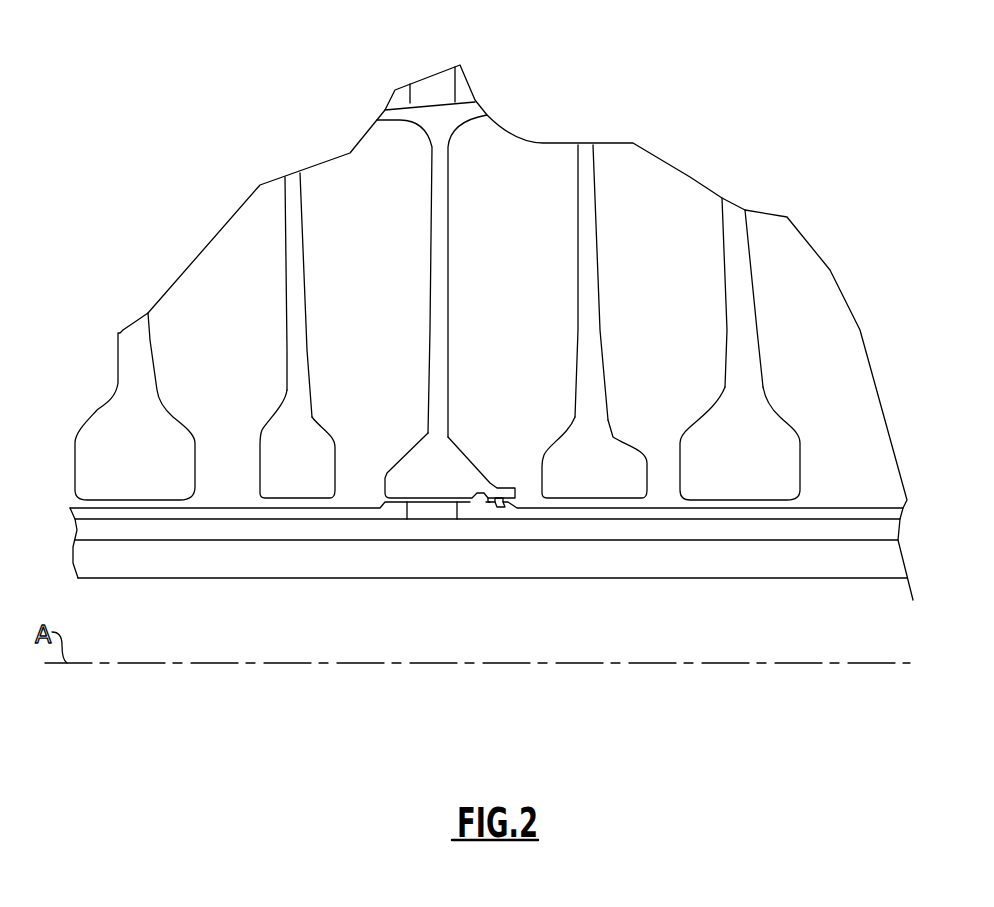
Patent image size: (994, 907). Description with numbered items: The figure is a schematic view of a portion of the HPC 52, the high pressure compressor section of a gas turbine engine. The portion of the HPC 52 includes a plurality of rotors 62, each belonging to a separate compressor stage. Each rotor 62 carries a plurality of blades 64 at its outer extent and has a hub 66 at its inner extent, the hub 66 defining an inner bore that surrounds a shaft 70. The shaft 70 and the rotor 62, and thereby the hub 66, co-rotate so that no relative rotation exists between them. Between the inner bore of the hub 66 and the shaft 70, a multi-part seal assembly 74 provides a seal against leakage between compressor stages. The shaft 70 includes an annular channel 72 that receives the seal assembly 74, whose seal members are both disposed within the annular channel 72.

The HPC 52 is at (494, 314).
The rotors 62 is at (297, 293).
The blades 64 is at (432, 93).
The hub 66 is at (420, 465).
The shaft 70 is at (635, 513).
The annular channel 72 is at (503, 507).
The multi-part seal assembly 74 is at (485, 515).